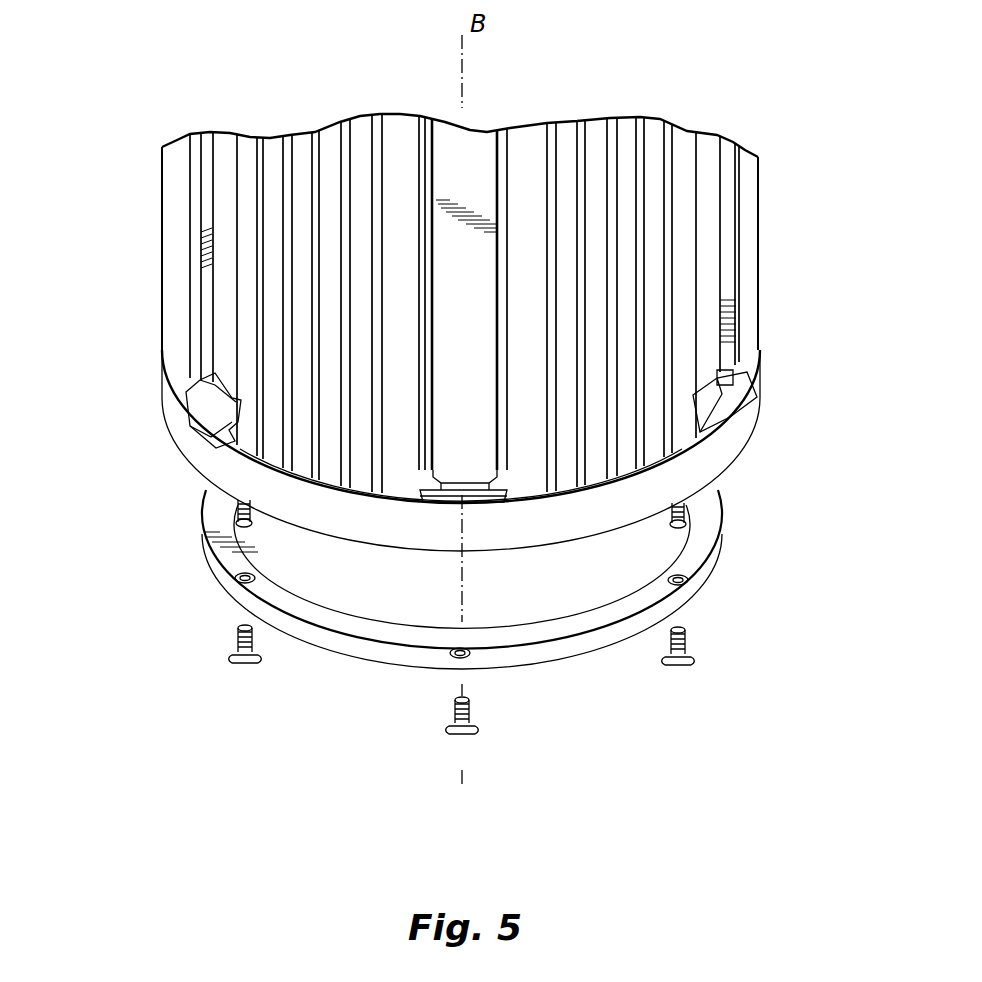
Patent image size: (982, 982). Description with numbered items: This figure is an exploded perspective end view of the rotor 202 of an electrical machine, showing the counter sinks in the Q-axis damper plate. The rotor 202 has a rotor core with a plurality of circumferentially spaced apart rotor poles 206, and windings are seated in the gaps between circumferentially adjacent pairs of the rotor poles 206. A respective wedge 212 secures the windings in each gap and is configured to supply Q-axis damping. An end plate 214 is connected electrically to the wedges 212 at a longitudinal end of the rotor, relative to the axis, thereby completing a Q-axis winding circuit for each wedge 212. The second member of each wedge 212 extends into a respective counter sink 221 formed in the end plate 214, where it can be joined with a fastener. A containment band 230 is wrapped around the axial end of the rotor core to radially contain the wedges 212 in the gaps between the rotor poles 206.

The rotor 202 is at (228, 726).
The rotor poles 206 is at (752, 333).
The wedge 212 is at (200, 358).
The end plate 214 is at (572, 637).
The counter sink 221 is at (250, 575).
The containment band 230 is at (200, 442).